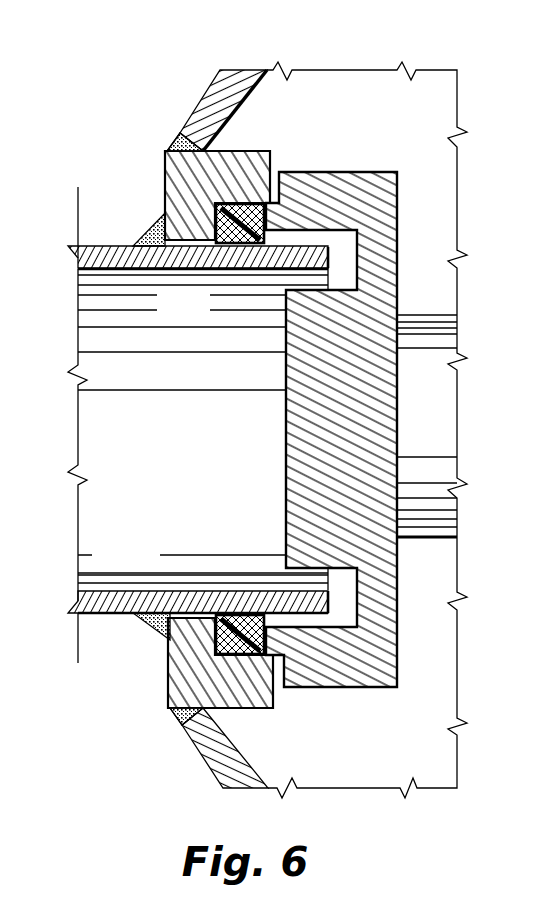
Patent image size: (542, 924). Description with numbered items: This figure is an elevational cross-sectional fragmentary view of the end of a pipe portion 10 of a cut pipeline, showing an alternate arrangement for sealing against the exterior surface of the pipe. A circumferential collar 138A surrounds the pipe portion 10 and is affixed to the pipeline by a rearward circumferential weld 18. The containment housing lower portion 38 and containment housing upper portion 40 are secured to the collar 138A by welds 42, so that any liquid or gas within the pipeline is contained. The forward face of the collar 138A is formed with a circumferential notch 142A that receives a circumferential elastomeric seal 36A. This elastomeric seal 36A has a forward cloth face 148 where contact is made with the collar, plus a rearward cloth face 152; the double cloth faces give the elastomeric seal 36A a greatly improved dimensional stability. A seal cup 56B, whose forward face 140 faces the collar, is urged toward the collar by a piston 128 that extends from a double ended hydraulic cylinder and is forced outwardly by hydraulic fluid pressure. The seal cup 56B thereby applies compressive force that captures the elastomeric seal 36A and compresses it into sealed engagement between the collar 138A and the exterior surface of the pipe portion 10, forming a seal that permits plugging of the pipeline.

The pipe portion 10 is at (103, 256).
The rearward circumferential weld 18 is at (153, 634).
The circumferential elastomeric seal 36A is at (240, 628).
The containment housing lower portion 38 is at (217, 752).
The containment housing upper portion 40 is at (203, 100).
The weld 42 is at (170, 138).
The seal cup 56B is at (388, 303).
The piston 128 is at (428, 405).
The collar 138A is at (185, 182).
The forward face 140 is at (288, 411).
The circumferential notch 142A is at (203, 578).
The forward cloth face 148 is at (216, 222).
The rearward cloth face 152 is at (241, 203).